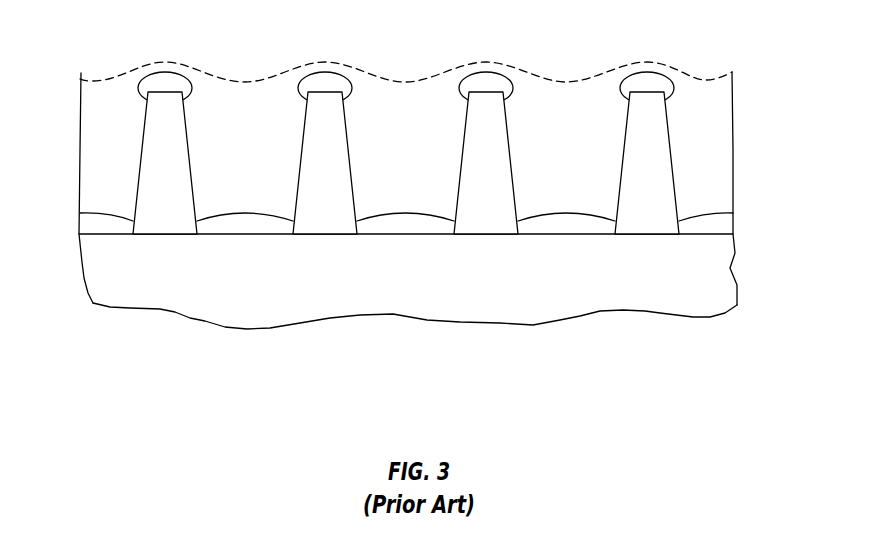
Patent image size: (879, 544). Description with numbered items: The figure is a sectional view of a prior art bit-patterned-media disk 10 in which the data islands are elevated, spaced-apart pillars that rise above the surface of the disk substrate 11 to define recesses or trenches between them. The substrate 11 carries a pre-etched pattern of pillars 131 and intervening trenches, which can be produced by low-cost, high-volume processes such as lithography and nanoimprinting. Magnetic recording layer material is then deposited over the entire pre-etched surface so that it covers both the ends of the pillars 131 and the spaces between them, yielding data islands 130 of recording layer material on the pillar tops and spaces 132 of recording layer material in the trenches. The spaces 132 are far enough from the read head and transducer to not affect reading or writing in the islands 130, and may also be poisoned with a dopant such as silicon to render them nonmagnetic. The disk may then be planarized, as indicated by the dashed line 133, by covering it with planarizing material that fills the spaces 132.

The prior art BPM disk 10 is at (162, 334).
The disk substrate 11 is at (667, 298).
The data islands 130 is at (167, 76).
The pillars 131 is at (175, 148).
The spaces 132 is at (108, 220).
The dashed line 133 is at (240, 81).